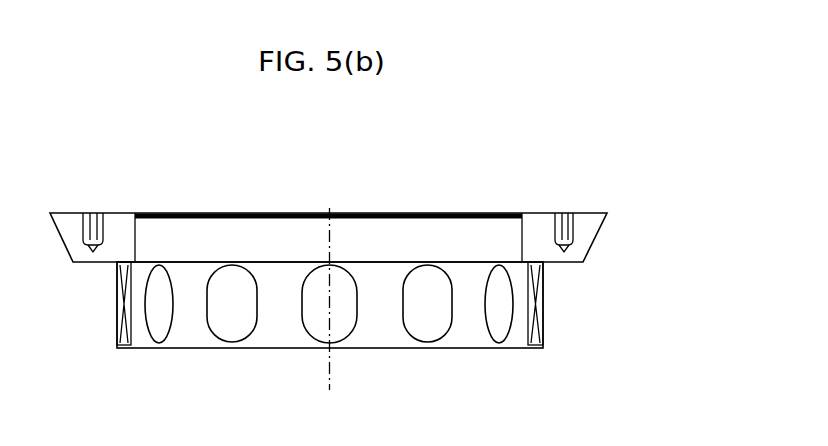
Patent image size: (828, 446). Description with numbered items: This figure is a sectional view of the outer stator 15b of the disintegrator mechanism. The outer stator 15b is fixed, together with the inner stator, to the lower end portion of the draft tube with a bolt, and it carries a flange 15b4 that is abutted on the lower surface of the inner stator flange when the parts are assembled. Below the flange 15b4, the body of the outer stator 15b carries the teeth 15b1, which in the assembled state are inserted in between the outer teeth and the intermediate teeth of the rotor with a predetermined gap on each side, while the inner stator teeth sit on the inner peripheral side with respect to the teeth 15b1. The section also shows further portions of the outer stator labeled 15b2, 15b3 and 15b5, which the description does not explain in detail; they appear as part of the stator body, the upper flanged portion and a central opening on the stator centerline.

The outer stator 15b is at (412, 213).
The teeth 15b1 is at (273, 328).
The end wall of frame body 15b2 is at (187, 333).
The top flange 15b3 is at (192, 232).
The flange 15b4 is at (537, 228).
The central opening 15b5 is at (315, 290).